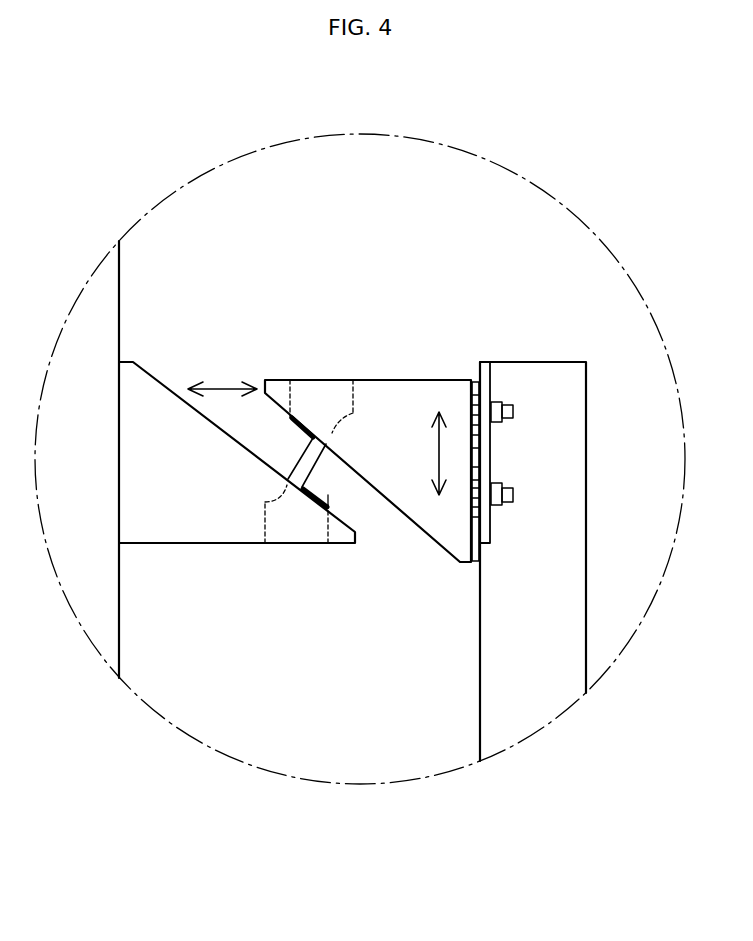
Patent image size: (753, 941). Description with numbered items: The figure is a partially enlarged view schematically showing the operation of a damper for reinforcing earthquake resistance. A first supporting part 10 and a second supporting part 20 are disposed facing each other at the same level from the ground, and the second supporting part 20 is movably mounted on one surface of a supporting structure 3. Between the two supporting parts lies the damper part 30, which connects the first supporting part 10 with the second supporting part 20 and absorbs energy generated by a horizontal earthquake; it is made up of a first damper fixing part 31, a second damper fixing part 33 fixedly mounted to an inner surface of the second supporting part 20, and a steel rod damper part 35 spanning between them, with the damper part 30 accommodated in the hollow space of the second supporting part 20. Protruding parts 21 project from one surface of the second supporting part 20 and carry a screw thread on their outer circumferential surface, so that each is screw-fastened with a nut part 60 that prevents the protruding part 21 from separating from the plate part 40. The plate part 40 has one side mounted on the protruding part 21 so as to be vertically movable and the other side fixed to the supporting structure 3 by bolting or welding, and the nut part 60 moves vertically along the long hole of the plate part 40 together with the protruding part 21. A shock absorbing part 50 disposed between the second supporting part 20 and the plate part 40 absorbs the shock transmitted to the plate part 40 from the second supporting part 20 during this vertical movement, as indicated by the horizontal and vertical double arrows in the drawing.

The supporting structure 3 is at (518, 712).
The first supporting part 10 is at (203, 545).
The second supporting part 20 is at (395, 393).
The protruding part 21 is at (514, 410).
The damper part 30 is at (337, 522).
The first damper fixing part 31 is at (288, 545).
The second damper fixing part 33 is at (340, 407).
The steel rod damper part 35 is at (312, 460).
The plate part 40 is at (481, 452).
The shock absorbing part 50 is at (473, 382).
The nut part 60 is at (495, 403).